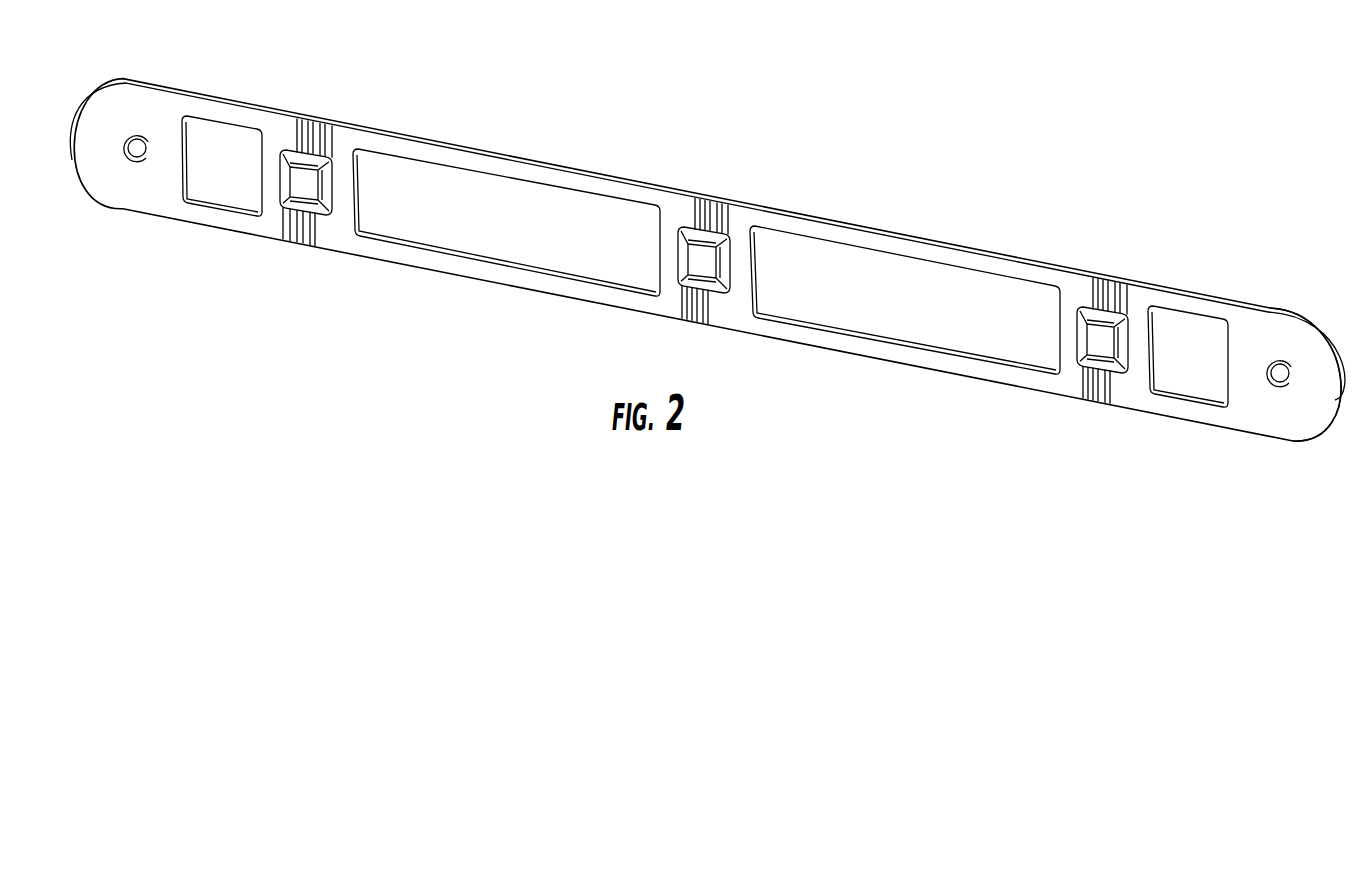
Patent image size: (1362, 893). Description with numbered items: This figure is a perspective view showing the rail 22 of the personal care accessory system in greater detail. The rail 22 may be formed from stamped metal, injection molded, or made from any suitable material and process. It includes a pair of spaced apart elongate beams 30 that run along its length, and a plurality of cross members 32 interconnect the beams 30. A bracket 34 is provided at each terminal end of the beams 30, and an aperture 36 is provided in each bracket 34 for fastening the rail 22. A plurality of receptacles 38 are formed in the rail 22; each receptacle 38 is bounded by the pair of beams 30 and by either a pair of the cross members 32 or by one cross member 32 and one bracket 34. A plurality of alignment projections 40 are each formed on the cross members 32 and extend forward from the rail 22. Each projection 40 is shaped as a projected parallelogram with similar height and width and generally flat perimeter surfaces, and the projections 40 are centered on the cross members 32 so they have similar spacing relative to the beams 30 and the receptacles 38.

The rail 22 is at (750, 203).
The elongate beams 30 is at (519, 171).
The cross members 32 is at (316, 130).
The bracket 34 is at (1268, 308).
The aperture 36 is at (1283, 368).
The receptacles 38 is at (218, 208).
The alignment projections 40 is at (307, 187).